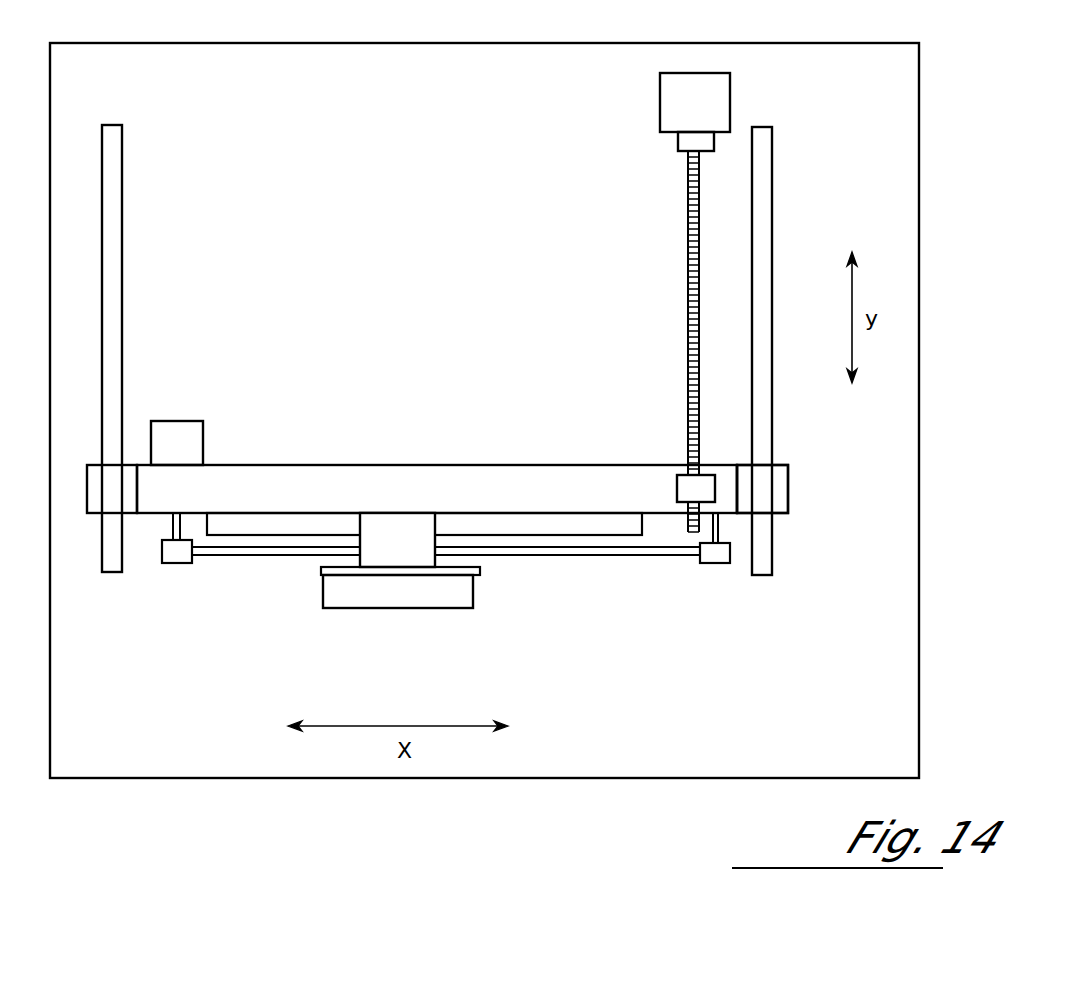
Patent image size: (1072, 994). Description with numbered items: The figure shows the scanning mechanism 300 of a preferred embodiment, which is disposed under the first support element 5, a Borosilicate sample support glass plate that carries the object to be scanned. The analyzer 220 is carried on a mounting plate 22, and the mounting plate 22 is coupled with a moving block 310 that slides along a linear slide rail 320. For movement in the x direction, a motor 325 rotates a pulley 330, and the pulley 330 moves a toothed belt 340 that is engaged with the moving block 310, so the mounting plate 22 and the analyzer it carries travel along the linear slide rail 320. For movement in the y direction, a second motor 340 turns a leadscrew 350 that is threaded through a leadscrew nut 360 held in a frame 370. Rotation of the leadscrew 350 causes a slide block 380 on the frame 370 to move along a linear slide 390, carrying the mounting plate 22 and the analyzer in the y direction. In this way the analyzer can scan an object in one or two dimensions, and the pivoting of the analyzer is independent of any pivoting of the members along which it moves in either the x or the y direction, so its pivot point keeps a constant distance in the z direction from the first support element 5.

The first support element 5 is at (209, 101).
The mounting plate 22 is at (482, 570).
The analyzer 220 is at (380, 610).
The scanning mechanism 300 is at (728, 650).
The moving block 310 is at (418, 517).
The linear slide rail 320 is at (288, 527).
The motor 325 is at (190, 428).
The pulley 330 is at (172, 555).
The toothed belt / second motor 340 is at (665, 103).
The leadscrew 350 is at (688, 237).
The leadscrew nut 360 is at (677, 490).
The frame 370 is at (382, 470).
The slide block 380 is at (785, 500).
The linear slide 390 is at (115, 203).